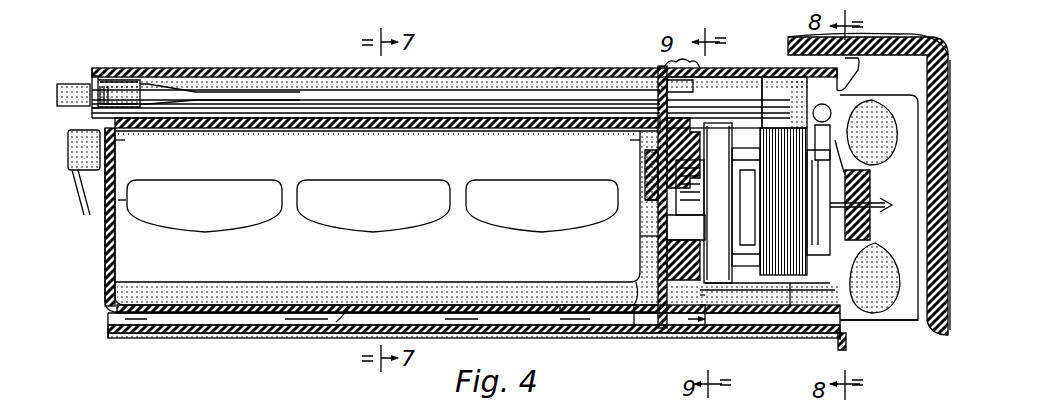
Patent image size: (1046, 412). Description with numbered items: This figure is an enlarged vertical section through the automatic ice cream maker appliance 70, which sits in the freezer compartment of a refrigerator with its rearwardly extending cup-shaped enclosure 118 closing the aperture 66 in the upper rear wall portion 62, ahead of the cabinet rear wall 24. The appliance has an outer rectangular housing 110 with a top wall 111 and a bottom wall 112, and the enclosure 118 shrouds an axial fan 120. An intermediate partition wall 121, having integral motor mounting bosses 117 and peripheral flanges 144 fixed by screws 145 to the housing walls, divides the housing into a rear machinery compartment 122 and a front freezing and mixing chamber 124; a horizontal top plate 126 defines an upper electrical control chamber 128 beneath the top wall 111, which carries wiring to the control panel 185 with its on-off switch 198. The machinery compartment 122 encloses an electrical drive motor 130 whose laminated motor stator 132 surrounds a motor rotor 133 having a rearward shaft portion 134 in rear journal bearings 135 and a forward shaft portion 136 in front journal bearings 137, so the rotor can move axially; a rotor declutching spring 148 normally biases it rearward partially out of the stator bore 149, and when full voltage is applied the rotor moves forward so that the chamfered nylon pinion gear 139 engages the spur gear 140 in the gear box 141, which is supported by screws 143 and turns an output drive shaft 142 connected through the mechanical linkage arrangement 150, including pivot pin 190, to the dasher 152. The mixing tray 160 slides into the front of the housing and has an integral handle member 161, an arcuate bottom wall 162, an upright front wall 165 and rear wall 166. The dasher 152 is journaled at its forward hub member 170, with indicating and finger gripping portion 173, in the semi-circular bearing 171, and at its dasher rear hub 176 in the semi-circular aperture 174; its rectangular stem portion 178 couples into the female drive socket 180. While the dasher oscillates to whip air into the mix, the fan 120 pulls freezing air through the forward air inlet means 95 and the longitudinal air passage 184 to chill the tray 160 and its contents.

The rear wall 24 is at (935, 336).
The upper rear wall portion 62 is at (848, 72).
The aperture 66 is at (850, 62).
The automatic ice cream maker appliance 70 is at (560, 66).
The forward air inlet means 95 is at (112, 322).
The outer rectangular housing 110 is at (173, 66).
The top wall 111 is at (222, 68).
The bottom wall 112 is at (222, 330).
The motor mounting bosses 117 is at (706, 240).
The cup-shaped enclosure 118 is at (872, 92).
The axial fan 120 is at (862, 334).
The intermediate partition wall 121 is at (686, 226).
The rear machinery compartment 122 is at (702, 310).
The front freezing and mixing chamber 124 is at (622, 268).
The top plate 126 is at (406, 122).
The upper electrical control chamber 128 is at (447, 84).
The electrical drive motor 130 is at (772, 126).
The motor stator 132 is at (794, 300).
The motor rotor 133 is at (872, 132).
The rearwardly extending shaft portion 134 is at (866, 322).
The rear journal bearings 135 is at (806, 294).
The forwardly extending shaft portion 136 is at (796, 268).
The front journal bearings 137 is at (713, 165).
The pinion gear 139 is at (746, 268).
The spur gear 140 is at (648, 195).
The gear box 141 is at (720, 300).
The output drive shaft 142 is at (660, 250).
The screws 143 is at (640, 330).
The peripheral flanges 144 is at (700, 76).
The screws 145 is at (690, 64).
The rotor declutching spring 148 is at (810, 200).
The stator bore 149 is at (783, 201).
The mechanical linkage arrangement 150 is at (632, 284).
The dasher 152 is at (112, 243).
The mixing tray 160 is at (344, 322).
The handle member 161 is at (80, 215).
The bottom wall 162 is at (576, 320).
The front wall 165 is at (105, 280).
The rear wall 166 is at (640, 236).
The forward hub member 170 is at (118, 142).
The semi-circular bearing 171 is at (112, 152).
The indicating and finger gripping portion 173 is at (72, 166).
The semi-circular aperture 174 is at (630, 150).
The dasher rear hub 176 is at (630, 150).
The stem portion 178 is at (645, 176).
The female drive socket 180 is at (654, 168).
The longitudinal air passage 184 is at (166, 320).
The control panel 185 is at (92, 82).
The pivot pin 190 is at (688, 190).
The on-off switch 198 is at (82, 106).